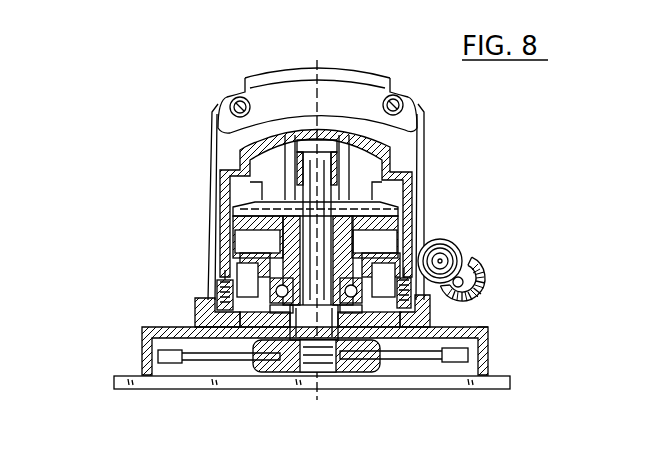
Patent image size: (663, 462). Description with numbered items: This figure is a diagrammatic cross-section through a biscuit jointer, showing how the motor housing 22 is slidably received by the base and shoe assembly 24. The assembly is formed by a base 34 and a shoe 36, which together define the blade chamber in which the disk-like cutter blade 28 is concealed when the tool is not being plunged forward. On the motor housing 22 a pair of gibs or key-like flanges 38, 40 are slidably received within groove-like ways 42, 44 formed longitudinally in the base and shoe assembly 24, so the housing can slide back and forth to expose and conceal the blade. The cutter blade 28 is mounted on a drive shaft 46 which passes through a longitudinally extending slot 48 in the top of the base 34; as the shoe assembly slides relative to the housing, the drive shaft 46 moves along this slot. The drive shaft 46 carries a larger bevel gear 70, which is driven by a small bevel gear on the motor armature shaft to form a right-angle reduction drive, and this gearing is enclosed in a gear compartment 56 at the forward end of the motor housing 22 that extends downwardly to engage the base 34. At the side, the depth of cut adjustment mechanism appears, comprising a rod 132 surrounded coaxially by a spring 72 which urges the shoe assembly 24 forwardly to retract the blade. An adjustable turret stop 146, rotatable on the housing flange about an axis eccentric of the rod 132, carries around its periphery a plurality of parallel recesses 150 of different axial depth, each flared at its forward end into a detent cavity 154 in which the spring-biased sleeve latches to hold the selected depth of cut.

The motor housing 22 is at (335, 69).
The base and shoe assembly 24 is at (114, 327).
The cutter blade 28 is at (203, 360).
The base 34 is at (148, 345).
The shoe 36 is at (165, 388).
The gib or key-like flange 38 is at (213, 304).
The gib or key-like flange 40 is at (470, 330).
The groove-like way 42 is at (195, 316).
The groove-like way 44 is at (420, 310).
The drive shaft 46 is at (327, 232).
The longitudinally extending slot 48 is at (355, 330).
The gear compartment 56 is at (243, 156).
The larger bevel gear 70 is at (238, 194).
The spring 72 is at (448, 250).
The rod 132 is at (439, 258).
The turret stop 146 is at (472, 240).
The recess 150 is at (492, 294).
The detent cavity 154 is at (478, 303).